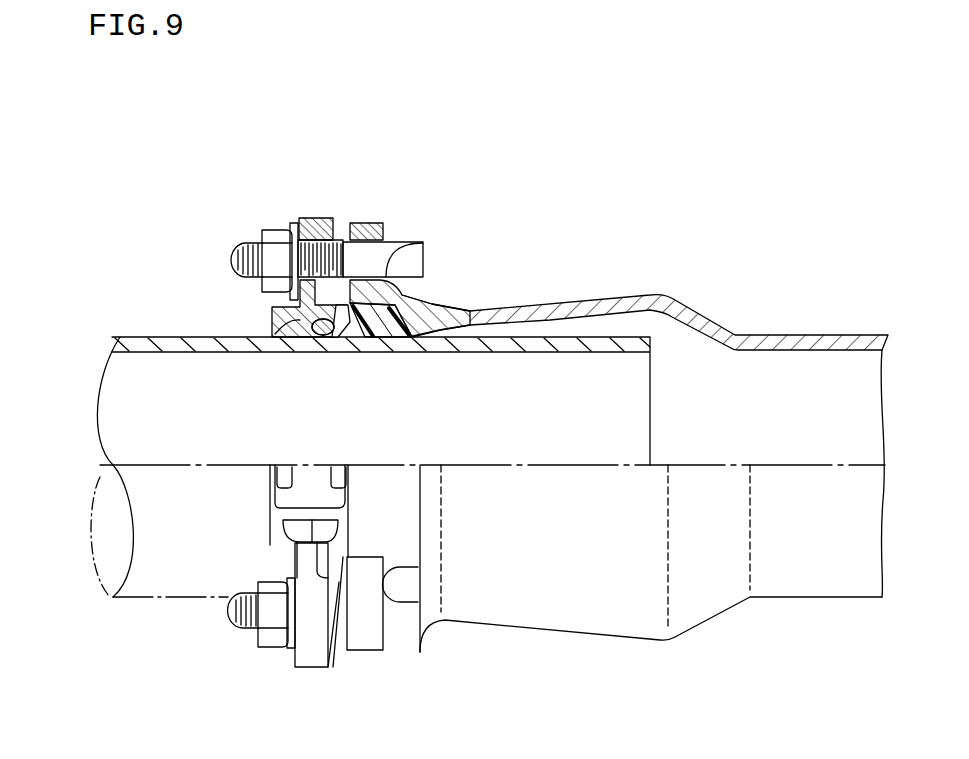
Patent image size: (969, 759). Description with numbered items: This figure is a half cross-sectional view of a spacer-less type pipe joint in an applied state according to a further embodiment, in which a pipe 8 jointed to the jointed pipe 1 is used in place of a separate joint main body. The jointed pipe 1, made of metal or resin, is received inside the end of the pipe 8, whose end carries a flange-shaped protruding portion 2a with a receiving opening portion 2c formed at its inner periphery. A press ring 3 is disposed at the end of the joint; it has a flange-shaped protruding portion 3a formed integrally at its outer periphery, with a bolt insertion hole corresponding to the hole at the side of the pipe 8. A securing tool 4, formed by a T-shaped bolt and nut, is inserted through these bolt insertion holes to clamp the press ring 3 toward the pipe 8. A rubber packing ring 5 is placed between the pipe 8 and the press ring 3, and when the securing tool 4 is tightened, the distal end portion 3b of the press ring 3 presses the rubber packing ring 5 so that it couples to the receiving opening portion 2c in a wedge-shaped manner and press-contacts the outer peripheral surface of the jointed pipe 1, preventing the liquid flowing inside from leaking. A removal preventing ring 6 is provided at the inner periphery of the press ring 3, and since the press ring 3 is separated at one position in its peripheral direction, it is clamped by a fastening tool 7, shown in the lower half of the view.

The jointed pipe 1 is at (95, 431).
The protruding portion 2a is at (370, 223).
The receiving opening portion 2c is at (413, 298).
The press ring 3 is at (266, 317).
The protruding portion 3a is at (325, 218).
The distal end portion 3b is at (338, 337).
The securing tool 4 is at (270, 220).
The rubber packing ring 5 is at (397, 330).
The removal preventing ring 6 is at (322, 335).
The fastening tool 7 is at (280, 533).
The pipe 8 is at (765, 335).